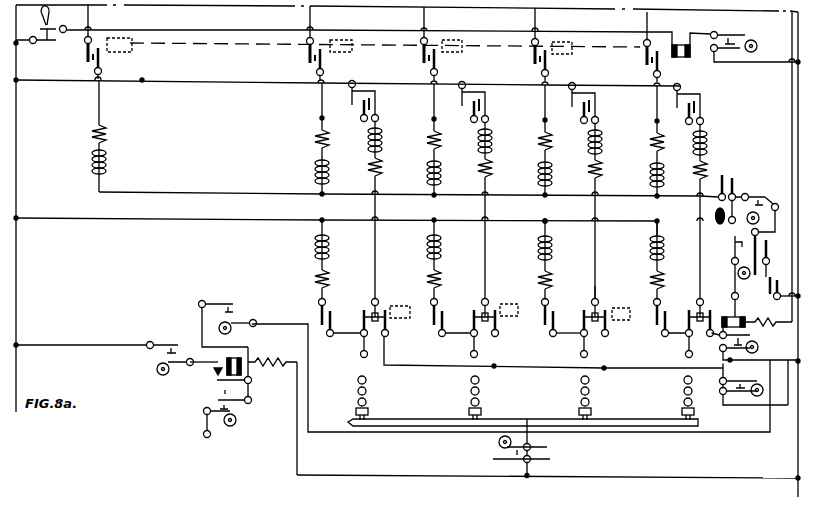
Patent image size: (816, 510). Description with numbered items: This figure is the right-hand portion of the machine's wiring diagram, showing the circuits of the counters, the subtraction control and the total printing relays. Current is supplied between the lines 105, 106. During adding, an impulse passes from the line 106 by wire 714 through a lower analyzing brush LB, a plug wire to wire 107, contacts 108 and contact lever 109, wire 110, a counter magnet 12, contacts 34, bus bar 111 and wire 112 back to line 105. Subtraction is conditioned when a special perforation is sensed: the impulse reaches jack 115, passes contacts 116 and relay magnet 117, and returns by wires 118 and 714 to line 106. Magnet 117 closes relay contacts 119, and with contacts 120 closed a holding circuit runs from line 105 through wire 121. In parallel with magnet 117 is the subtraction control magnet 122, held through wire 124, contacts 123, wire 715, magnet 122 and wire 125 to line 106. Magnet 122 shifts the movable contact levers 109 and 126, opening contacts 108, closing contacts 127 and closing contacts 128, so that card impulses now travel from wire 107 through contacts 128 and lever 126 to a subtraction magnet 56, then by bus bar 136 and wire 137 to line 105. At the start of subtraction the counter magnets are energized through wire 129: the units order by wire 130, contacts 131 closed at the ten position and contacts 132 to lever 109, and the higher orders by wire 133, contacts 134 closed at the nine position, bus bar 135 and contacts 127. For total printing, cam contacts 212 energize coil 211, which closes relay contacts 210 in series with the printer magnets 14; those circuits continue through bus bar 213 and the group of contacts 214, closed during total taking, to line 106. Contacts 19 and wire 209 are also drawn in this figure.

The counter magnet 12 is at (386, 148).
The printer magnet 14 is at (312, 165).
The relay contact 19 is at (356, 105).
The contacts 34 is at (583, 82).
The subtraction magnet 56 is at (540, 250).
The line 105 is at (18, 278).
The line 106 is at (797, 462).
The wire 107 is at (583, 342).
The contacts 108 is at (586, 305).
The contact lever 109 is at (380, 312).
The wire 110 is at (377, 251).
The bus bar 111 is at (614, 85).
The wire 112 is at (141, 81).
The jack 115 is at (203, 436).
The contacts 116 is at (238, 416).
The relay magnet 117 is at (248, 372).
The wire 118 is at (296, 458).
The relay contacts 119 is at (215, 374).
The contacts 120 is at (168, 355).
The wire 121 is at (40, 345).
The subtraction control magnet 122 is at (404, 320).
The contacts 123 is at (233, 315).
The wire 124 is at (200, 322).
The wire 125 is at (770, 326).
The switch lever 126 is at (331, 312).
The contacts 127 is at (607, 308).
The contacts 128 is at (585, 314).
The wire 129 is at (792, 160).
The wire 130 is at (730, 361).
The contacts 131 is at (721, 350).
The contacts 132 is at (716, 312).
The wire 133 is at (740, 406).
The contacts 134 is at (730, 386).
The bus bar 135 is at (616, 369).
The bus bar 136 is at (503, 221).
The wire 137 is at (90, 218).
The conductor 209 is at (312, 20).
The relay contacts 210 is at (87, 64).
The coil 211 is at (120, 36).
The cam contacts 212 is at (742, 36).
The bus bar 213 is at (141, 192).
The contacts 214 is at (738, 240).
The wire 714 is at (632, 478).
The wire 715 is at (310, 388).
The lower analyzing brushes LB is at (523, 401).